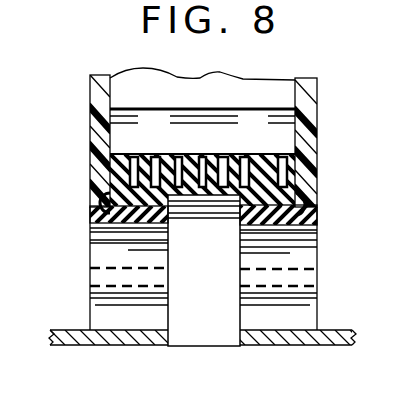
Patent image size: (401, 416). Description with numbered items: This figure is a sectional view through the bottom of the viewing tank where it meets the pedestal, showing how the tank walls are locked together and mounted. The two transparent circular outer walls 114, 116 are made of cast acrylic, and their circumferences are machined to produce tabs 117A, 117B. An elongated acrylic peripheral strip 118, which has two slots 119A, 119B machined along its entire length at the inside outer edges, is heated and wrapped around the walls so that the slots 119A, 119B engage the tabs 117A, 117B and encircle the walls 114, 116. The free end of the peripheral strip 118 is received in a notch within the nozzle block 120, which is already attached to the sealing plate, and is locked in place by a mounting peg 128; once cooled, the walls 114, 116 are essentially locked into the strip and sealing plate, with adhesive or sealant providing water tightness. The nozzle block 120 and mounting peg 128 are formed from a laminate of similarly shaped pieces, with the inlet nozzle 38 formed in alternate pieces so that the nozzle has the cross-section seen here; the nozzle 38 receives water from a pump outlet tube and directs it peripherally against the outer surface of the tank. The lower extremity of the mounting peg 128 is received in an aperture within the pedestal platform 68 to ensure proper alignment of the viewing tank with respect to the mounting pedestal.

The inlet nozzle 38 is at (177, 155).
The lower shelf 68 is at (110, 334).
The outer wall 114 is at (89, 125).
The outer wall 116 is at (318, 117).
The tab 117A is at (107, 209).
The tab 117B is at (304, 205).
The peripheral strip 118 is at (267, 88).
The slot 119A is at (90, 225).
The slot 119B is at (303, 227).
The nozzle block 120 is at (178, 117).
The mounting peg 128 is at (217, 328).